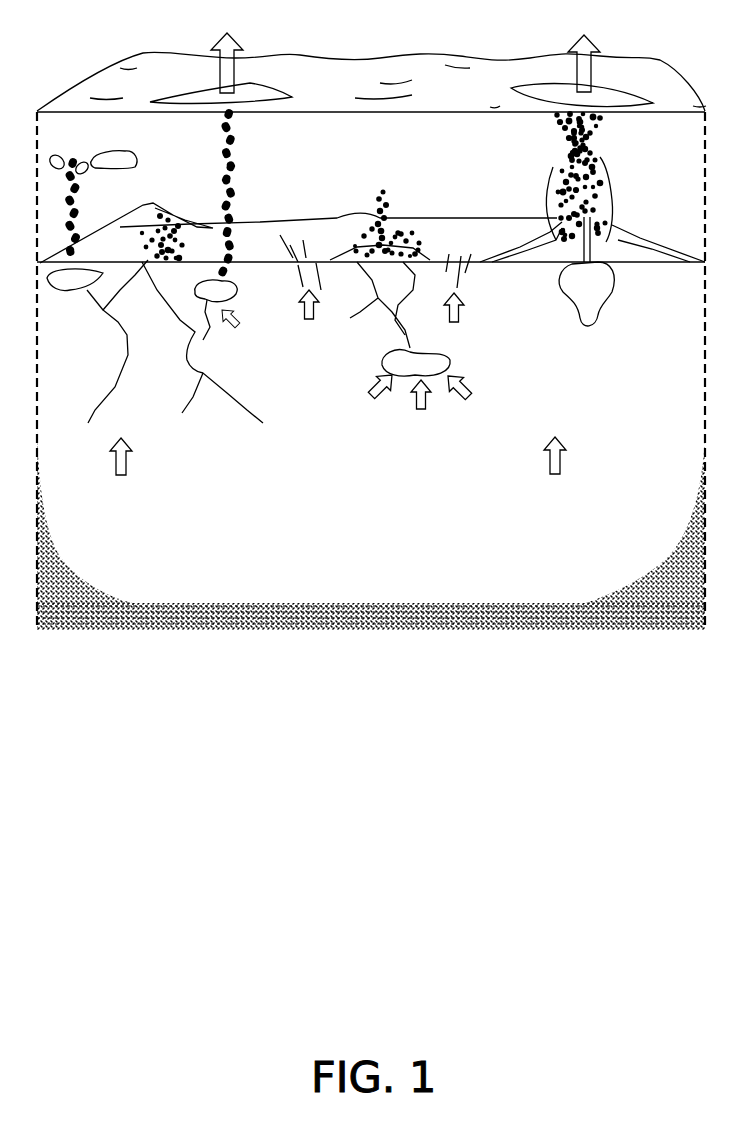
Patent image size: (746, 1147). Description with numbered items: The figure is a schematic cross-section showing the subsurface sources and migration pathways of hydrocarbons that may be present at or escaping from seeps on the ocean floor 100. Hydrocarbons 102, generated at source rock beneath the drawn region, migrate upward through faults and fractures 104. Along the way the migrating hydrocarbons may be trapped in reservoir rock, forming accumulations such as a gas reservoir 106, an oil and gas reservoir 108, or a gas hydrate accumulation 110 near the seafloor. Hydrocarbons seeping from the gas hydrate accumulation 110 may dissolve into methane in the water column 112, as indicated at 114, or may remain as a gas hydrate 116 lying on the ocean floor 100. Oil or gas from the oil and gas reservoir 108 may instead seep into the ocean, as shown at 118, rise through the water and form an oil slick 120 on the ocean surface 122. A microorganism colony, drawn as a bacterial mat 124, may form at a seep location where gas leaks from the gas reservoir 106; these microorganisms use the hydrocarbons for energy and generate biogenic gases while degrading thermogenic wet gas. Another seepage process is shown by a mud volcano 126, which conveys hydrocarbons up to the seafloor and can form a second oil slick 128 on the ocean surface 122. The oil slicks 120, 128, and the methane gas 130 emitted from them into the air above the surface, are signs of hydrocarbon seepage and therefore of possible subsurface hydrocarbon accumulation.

The ocean floor 100 is at (472, 236).
The hydrocarbons 102 is at (134, 470).
The faults and fractures 104 is at (203, 370).
The gas reservoir 106 is at (435, 364).
The oil and gas reservoir 108 is at (223, 292).
The gas hydrate accumulation 110 is at (67, 293).
The water column 112 is at (450, 167).
The dissolved methane 114 is at (128, 150).
The gas hydrate 116 is at (140, 268).
The oil or gas seep 118 is at (237, 187).
The oil slick 120 is at (253, 88).
The ocean surface 122 is at (100, 88).
The bacterial mat 124 is at (422, 262).
The mud volcano 126 is at (580, 302).
The oil slick 128 is at (613, 97).
The methane gas 130 is at (220, 40).